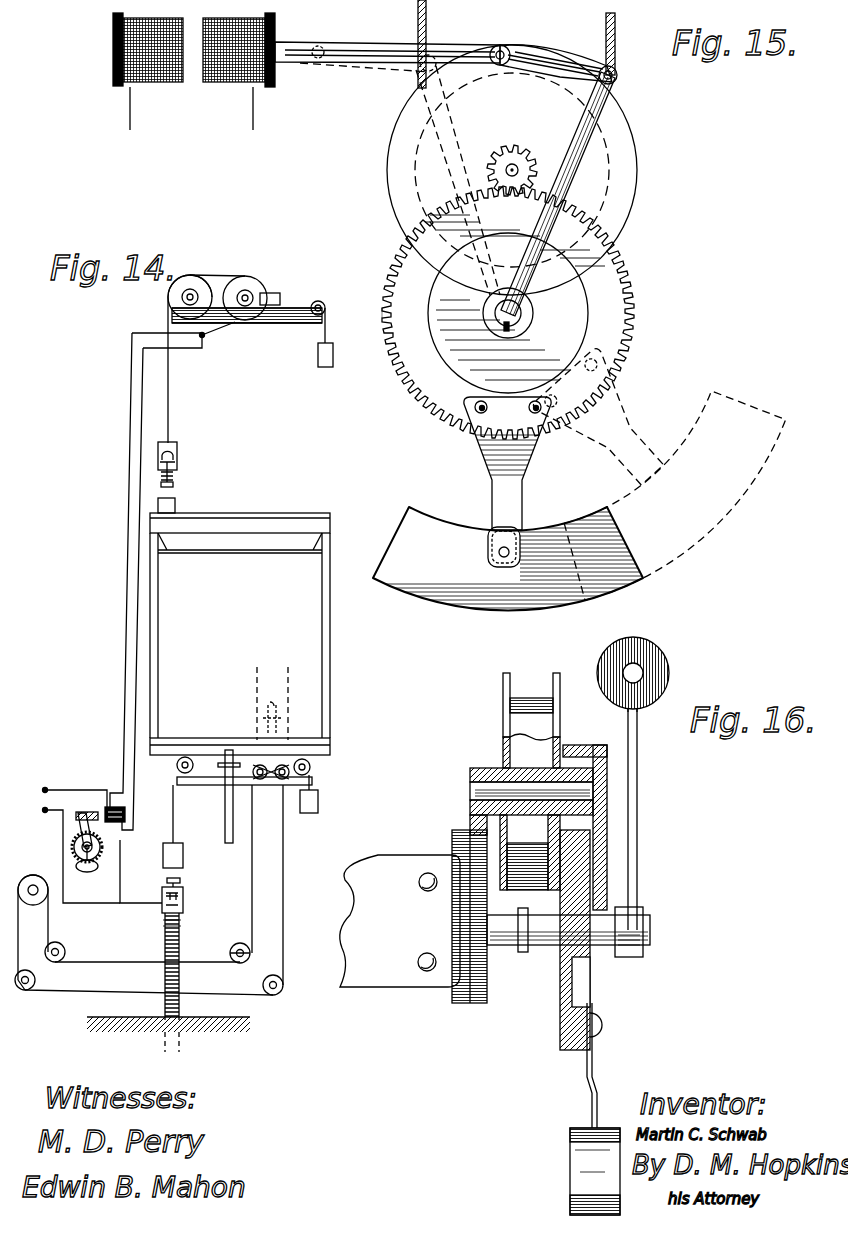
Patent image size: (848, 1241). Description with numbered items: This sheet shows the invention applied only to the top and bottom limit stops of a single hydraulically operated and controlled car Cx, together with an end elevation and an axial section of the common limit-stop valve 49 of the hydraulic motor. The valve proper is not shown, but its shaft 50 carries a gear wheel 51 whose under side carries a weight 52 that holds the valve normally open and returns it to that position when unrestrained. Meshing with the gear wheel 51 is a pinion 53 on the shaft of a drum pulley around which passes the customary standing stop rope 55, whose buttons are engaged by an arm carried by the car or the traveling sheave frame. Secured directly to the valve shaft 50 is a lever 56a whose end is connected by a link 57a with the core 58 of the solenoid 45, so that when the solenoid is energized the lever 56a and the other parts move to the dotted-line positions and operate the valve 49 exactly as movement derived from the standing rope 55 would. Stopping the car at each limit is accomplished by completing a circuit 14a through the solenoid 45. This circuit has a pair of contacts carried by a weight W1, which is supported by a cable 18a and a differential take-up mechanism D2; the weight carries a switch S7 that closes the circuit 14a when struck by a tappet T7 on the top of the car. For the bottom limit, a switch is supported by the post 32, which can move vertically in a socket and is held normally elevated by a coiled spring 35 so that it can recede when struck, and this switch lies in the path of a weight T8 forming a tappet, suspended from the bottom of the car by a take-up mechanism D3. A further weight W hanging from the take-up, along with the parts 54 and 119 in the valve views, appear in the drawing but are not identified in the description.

In FIG. 14, the circuit 14a is at (128, 588).
In FIG. 14, the cable 18a is at (169, 393).
In FIG. 14, the post 32 is at (181, 953).
In FIG. 14, the coiled spring 35 is at (163, 918).
In FIG. 15, the solenoid 45 is at (194, 71).
In FIG. 14, the solenoid 45 is at (126, 813).
In FIG. 16, the solenoid 45 is at (640, 708).
In FIG. 15, the limit stop valve 49 is at (637, 310).
In FIG. 14, the limit stop valve 49 is at (103, 847).
In FIG. 16, the limit stop valve 49 is at (469, 916).
In FIG. 15, the shaft 50 is at (519, 318).
In FIG. 16, the shaft 50 is at (550, 940).
In FIG. 15, the gear wheel 51 is at (388, 279).
In FIG. 16, the gear wheel 51 is at (574, 998).
In FIG. 15, the weight 52 is at (437, 528).
In FIG. 14, the weight 52 is at (77, 866).
In FIG. 16, the weight 52 is at (582, 1166).
In FIG. 15, the pinion 53 is at (521, 163).
In FIG. 16, the pinion 53 is at (596, 803).
In FIG. 16, the cylinder 54 is at (510, 715).
In FIG. 15, the standing stop rope 55 is at (614, 52).
In FIG. 15, the lever 56a is at (596, 183).
In FIG. 16, the lever 56a is at (634, 864).
In FIG. 15, the link 57a is at (540, 61).
In FIG. 15, the core 58 is at (318, 47).
In FIG. 14, the core 58 is at (184, 881).
In FIG. 16, the core 58 is at (643, 676).
In FIG. 16, the bracket 119 is at (400, 921).
In FIG. 14, the weight W is at (325, 367).
In FIG. 14, the weight W1 is at (178, 452).
In FIG. 14, the switch S7 is at (178, 481).
In FIG. 14, the tappet T7 is at (176, 505).
In FIG. 14, the weight T8 is at (178, 848).
In FIG. 14, the differential take-up mechanism D2 is at (246, 293).
In FIG. 14, the take-up mechanism D3 is at (313, 771).
In FIG. 14, the car Cx is at (240, 634).